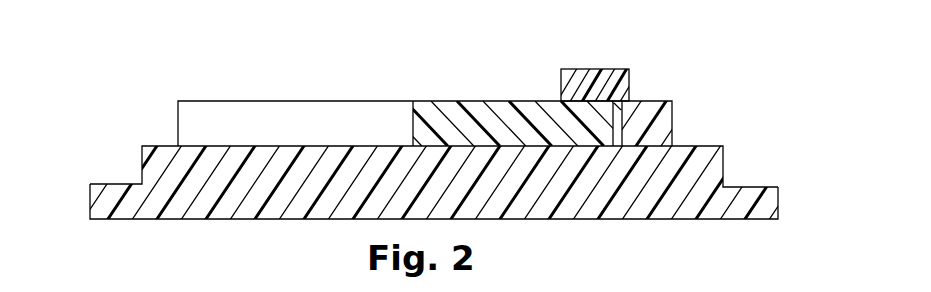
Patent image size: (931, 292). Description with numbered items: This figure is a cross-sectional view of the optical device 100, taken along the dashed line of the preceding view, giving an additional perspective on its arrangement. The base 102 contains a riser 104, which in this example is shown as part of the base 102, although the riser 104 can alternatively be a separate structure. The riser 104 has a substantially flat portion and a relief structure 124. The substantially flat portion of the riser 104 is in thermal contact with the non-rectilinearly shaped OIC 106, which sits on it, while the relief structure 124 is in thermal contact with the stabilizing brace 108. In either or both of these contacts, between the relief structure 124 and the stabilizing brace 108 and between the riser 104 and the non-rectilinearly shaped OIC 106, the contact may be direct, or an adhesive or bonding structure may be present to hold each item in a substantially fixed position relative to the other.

The optical device 100 is at (116, 82).
The base 102 is at (108, 203).
The riser 104 is at (158, 163).
The non-rectilinearly shaped OIC 106 is at (453, 115).
The stabilizing brace 108 is at (603, 72).
The relief structure 124 is at (658, 118).